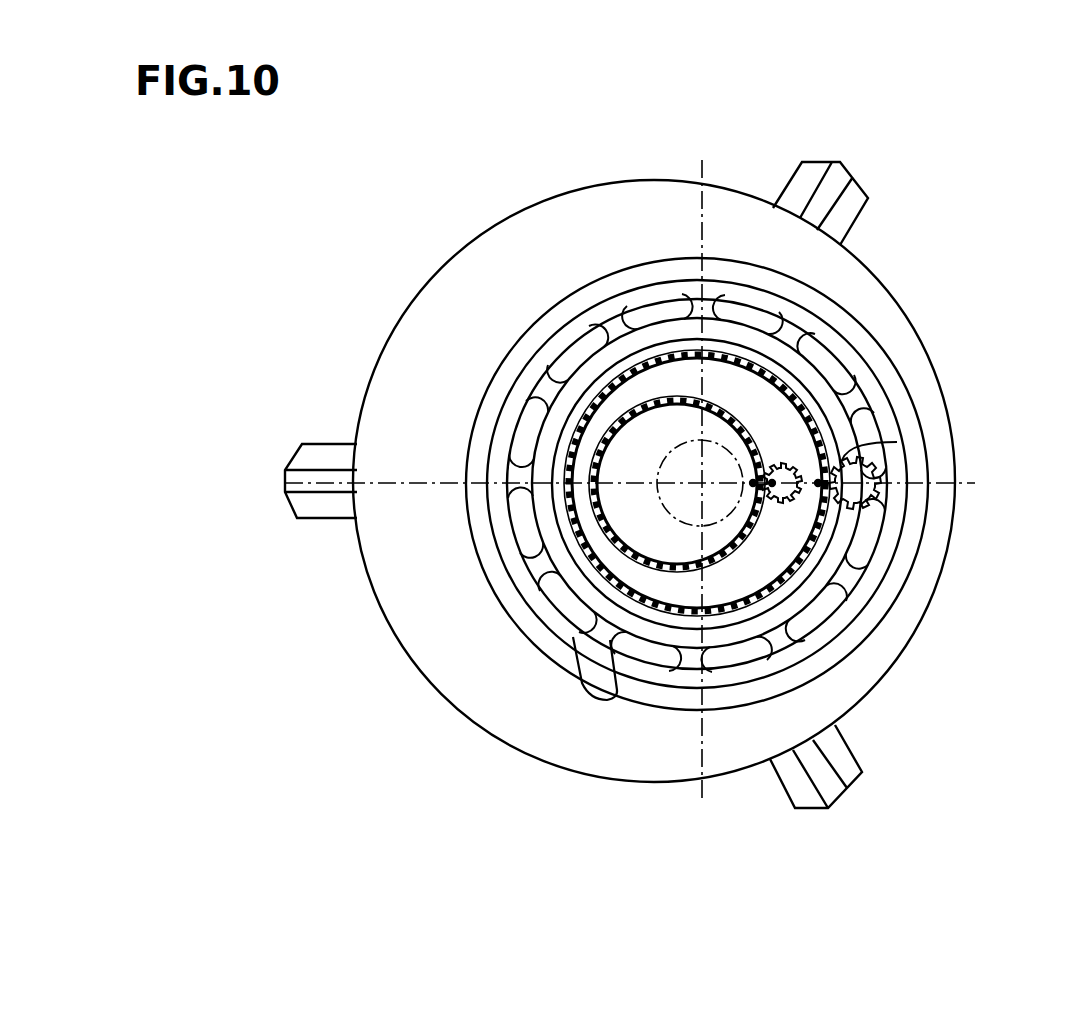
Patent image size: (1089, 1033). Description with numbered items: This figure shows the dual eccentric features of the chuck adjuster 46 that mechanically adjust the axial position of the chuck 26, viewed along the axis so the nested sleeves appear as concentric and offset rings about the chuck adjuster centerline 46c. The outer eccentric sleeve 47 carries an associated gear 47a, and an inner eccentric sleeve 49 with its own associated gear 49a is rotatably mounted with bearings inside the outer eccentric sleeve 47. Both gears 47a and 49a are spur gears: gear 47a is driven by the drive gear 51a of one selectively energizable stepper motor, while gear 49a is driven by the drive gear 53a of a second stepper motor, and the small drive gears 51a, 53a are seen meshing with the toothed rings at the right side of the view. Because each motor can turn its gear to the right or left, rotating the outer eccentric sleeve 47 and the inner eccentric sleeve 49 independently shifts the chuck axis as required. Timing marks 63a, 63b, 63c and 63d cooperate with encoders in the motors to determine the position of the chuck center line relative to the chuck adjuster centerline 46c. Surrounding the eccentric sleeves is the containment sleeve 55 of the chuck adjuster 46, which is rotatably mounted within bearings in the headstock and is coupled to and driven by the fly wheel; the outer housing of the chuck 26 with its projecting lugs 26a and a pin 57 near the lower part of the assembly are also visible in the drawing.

The chuck 26 is at (955, 453).
The mounting lug 26a is at (803, 160).
The chuck adjuster 46 is at (902, 567).
The chuck adjuster centerline 46c is at (702, 483).
The outer eccentric sleeve 47 is at (837, 567).
The gear 47a is at (807, 572).
The inner eccentric sleeve 49 is at (740, 560).
The gear 49a is at (687, 609).
The drive gear 51a is at (845, 505).
The drive gear 53a is at (772, 483).
The containment sleeve 55 is at (642, 362).
The pin 57 is at (590, 637).
The timing mark 63a is at (842, 460).
The timing mark 63b is at (818, 483).
The timing mark 63c is at (753, 483).
The timing mark 63d is at (765, 483).